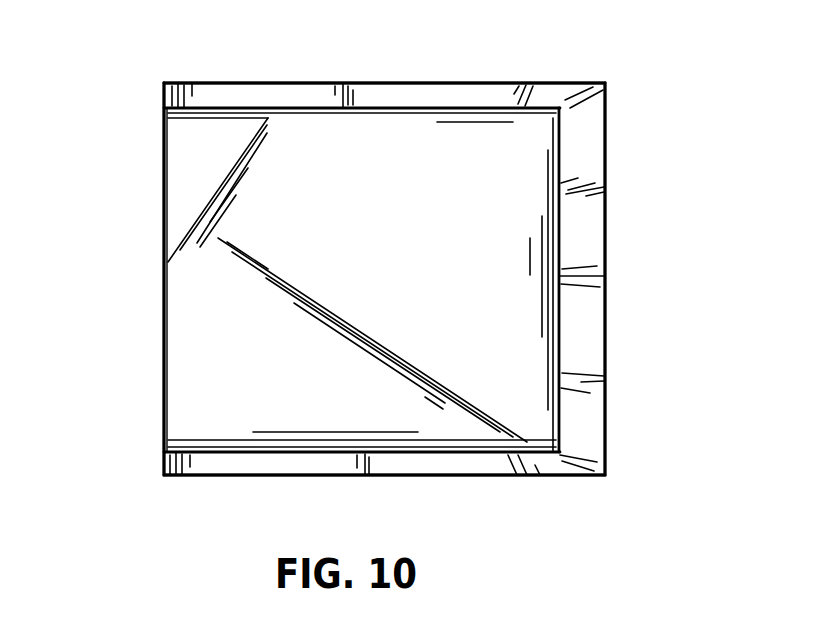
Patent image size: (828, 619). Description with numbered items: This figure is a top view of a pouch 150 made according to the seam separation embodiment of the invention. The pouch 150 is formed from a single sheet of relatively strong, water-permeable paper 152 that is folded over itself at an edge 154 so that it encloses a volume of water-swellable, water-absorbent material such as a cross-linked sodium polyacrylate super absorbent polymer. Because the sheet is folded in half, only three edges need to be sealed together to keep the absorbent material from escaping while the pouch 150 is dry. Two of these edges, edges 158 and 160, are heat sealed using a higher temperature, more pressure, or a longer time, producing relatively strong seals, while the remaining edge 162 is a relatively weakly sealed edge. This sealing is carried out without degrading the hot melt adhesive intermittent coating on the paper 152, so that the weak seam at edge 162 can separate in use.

The pouch 150 is at (438, 54).
The water-permeable paper 152 is at (173, 147).
The fold edge 154 is at (160, 310).
The strongly sealed edge 158 is at (298, 96).
The strongly sealed edge 160 is at (585, 213).
The weakly sealed edge 162 is at (483, 462).